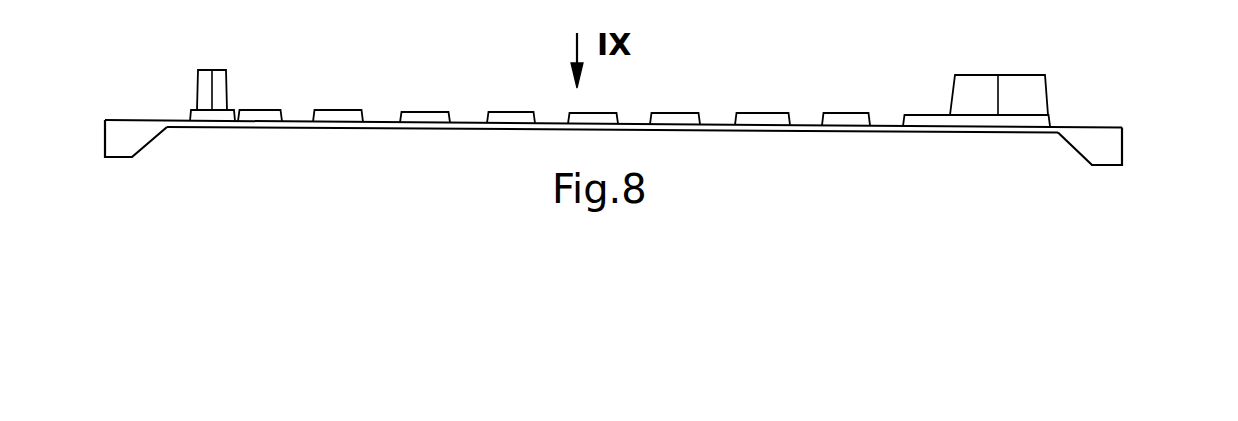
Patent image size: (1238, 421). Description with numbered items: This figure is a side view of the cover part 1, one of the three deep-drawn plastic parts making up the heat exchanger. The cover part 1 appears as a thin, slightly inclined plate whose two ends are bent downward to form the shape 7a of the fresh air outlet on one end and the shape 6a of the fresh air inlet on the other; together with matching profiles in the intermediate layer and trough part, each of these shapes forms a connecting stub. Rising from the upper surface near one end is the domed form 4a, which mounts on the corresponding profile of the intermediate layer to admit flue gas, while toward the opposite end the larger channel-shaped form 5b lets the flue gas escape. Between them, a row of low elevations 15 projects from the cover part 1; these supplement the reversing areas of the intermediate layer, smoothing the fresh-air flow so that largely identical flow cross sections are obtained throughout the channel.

The cover part 1 is at (350, 147).
The domed form of the flue gas inlet 4a is at (227, 86).
The channel-shaped form of the flue gas outlet 5b is at (1048, 90).
The shape of the fresh air inlet 6a is at (1112, 147).
The shape of the fresh air outlet 7a is at (122, 130).
The elevations 15 is at (494, 110).